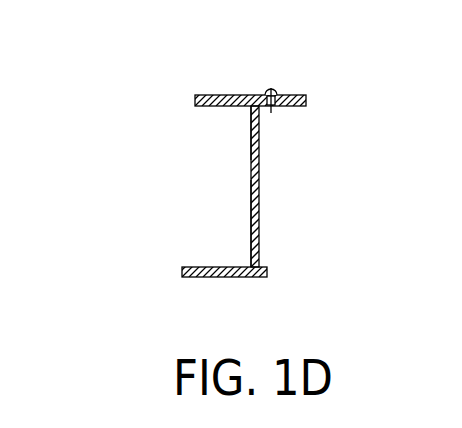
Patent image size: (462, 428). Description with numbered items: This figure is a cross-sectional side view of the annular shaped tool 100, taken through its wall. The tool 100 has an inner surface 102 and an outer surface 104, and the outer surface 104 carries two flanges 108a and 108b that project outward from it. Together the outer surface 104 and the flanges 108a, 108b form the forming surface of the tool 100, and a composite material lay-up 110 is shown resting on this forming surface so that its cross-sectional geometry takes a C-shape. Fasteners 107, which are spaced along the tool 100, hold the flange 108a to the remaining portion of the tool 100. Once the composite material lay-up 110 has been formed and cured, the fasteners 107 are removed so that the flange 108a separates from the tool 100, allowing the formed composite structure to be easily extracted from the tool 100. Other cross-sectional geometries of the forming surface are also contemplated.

The tool 100 is at (218, 70).
The inner surface 102 is at (260, 167).
The outer surface 104 is at (250, 193).
The fasteners 107 is at (271, 88).
The flange 108a is at (205, 107).
The flange 108b is at (208, 278).
The composite material lay-up 110 is at (250, 142).